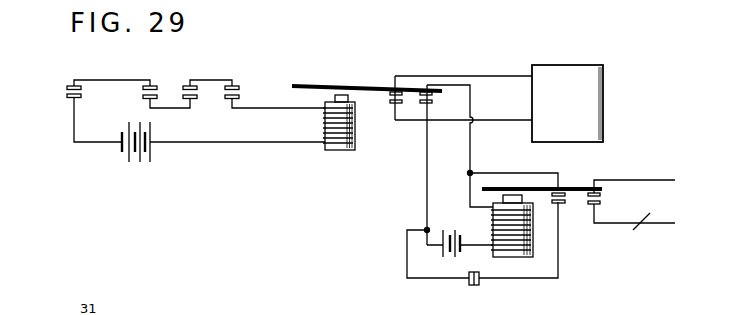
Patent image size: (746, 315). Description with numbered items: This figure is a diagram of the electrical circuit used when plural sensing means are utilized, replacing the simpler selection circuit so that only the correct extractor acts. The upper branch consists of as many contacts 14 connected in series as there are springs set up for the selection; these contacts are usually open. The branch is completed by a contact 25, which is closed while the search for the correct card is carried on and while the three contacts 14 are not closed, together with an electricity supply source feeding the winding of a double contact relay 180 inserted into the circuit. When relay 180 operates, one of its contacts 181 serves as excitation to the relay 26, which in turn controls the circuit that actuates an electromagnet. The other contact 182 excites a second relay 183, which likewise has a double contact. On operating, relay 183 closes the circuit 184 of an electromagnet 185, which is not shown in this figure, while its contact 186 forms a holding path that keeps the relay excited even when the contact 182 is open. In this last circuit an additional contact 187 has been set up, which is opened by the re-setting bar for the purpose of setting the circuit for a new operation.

The contact 25 is at (63, 88).
The contacts 14 is at (160, 89).
The double contact relay 180 is at (334, 85).
The contact 181 is at (392, 93).
The contact 182 is at (432, 95).
The relay 26 is at (603, 100).
The second relay 183 is at (518, 251).
The circuit 184 is at (603, 197).
The electromagnet 185 is at (650, 230).
The contact 186 is at (562, 204).
The additional contact 187 is at (478, 287).